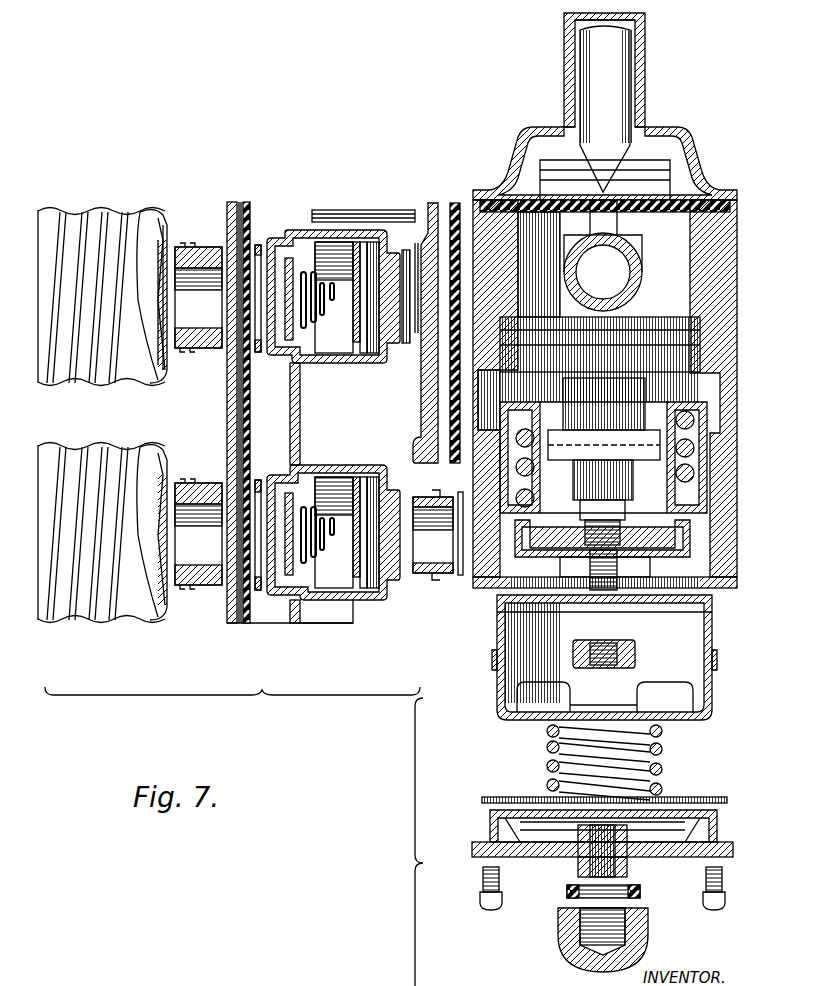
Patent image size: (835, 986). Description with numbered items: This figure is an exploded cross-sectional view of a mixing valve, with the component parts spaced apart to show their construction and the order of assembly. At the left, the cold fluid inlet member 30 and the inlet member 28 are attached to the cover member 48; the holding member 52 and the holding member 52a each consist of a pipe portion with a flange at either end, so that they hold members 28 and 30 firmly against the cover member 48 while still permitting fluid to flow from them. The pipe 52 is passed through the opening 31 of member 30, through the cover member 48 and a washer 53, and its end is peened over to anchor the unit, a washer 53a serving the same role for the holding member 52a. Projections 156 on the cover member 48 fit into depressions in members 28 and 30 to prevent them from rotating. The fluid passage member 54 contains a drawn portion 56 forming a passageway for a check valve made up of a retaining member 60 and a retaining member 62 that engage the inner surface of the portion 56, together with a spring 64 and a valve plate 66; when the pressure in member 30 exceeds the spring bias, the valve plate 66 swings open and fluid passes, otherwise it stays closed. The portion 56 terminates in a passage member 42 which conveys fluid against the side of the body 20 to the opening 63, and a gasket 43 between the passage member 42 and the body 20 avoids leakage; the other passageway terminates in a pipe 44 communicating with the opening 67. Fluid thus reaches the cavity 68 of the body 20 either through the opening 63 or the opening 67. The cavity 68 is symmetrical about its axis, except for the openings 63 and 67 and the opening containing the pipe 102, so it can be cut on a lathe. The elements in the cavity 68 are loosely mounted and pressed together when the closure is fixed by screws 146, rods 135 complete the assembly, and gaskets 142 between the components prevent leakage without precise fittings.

The body 20 is at (735, 205).
The fluid inlet member 28 is at (82, 622).
The cold fluid inlet member 30 is at (65, 210).
The opening 31 is at (148, 215).
The passage member 42 is at (425, 235).
The gasket 43 is at (455, 203).
The pipe 44 is at (430, 575).
The cover member 48 is at (232, 202).
The holding member 52 is at (200, 247).
The holding member 52a is at (202, 585).
The washer 53 is at (258, 245).
The washer 53a is at (257, 592).
The fluid passage member 54 is at (290, 257).
The drawn portion 56 is at (330, 240).
The retaining member 60 is at (278, 240).
The retaining member 62 is at (362, 280).
The opening 63 is at (717, 402).
The spring 64 is at (328, 318).
The valve plate 66 is at (306, 282).
The opening 67 is at (715, 527).
The cavity 68 is at (700, 238).
The pipe 102 is at (640, 280).
The rod 135 is at (360, 212).
The gasket 142 is at (193, 483).
The screw 146 is at (488, 910).
The projection 156 is at (226, 218).